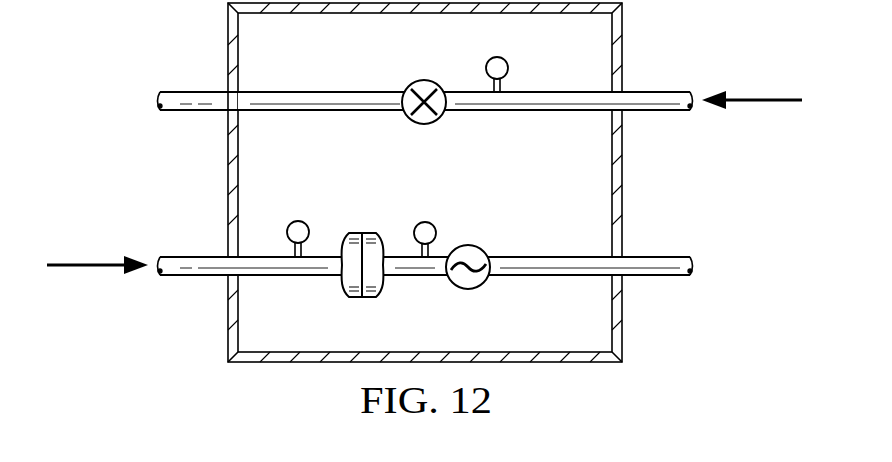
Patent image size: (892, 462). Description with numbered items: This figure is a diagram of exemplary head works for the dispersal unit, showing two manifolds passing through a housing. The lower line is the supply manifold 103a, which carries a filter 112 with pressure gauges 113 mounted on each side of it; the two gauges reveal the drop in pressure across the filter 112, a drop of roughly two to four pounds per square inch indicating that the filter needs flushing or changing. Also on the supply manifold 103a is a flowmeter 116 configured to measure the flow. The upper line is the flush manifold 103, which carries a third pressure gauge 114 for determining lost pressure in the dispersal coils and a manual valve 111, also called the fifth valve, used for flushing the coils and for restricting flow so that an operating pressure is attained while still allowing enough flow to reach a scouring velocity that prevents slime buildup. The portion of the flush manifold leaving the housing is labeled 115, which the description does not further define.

The flush manifold 103 is at (655, 91).
The supply manifold 103a is at (195, 277).
The manual valve 111 is at (418, 80).
The filter 112 is at (341, 293).
The pressure gauge 113 is at (292, 220).
The third pressure gauge 114 is at (510, 67).
The outlet pipe 115 is at (192, 91).
The flowmeter 116 is at (469, 290).